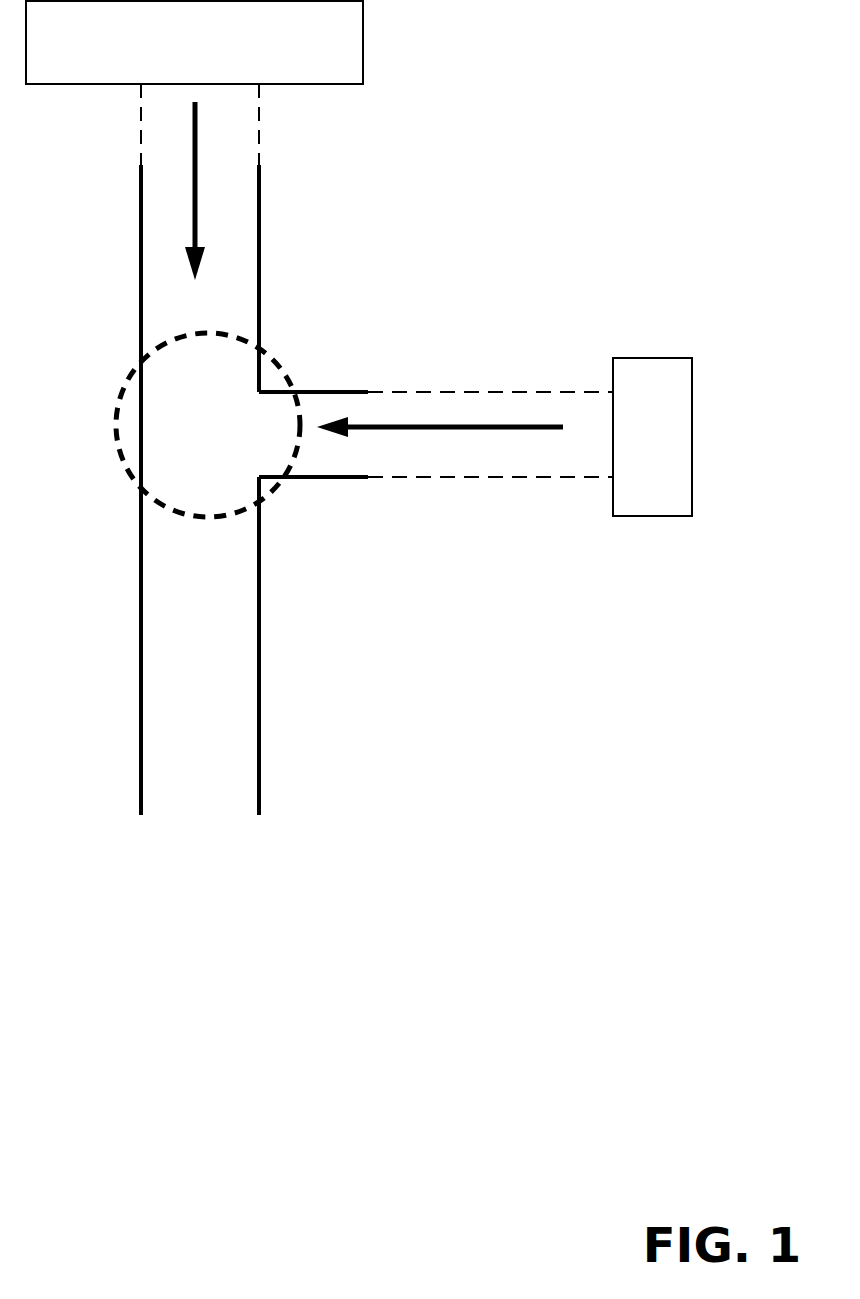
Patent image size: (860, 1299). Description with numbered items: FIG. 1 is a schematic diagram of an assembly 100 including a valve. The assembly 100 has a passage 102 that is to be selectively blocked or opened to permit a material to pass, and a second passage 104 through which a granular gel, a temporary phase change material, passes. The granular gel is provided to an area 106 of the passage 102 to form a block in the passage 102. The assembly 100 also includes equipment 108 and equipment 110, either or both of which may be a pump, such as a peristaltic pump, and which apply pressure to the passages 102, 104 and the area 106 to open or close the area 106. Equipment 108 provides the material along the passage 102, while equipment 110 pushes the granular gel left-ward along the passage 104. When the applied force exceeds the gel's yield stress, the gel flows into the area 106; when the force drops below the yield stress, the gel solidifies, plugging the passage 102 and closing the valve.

The assembly 100 is at (543, 168).
The passage 102 is at (125, 252).
The second passage 104 is at (332, 483).
The area 106 is at (112, 387).
The equipment 108 is at (194, 42).
The equipment 110 is at (652, 437).